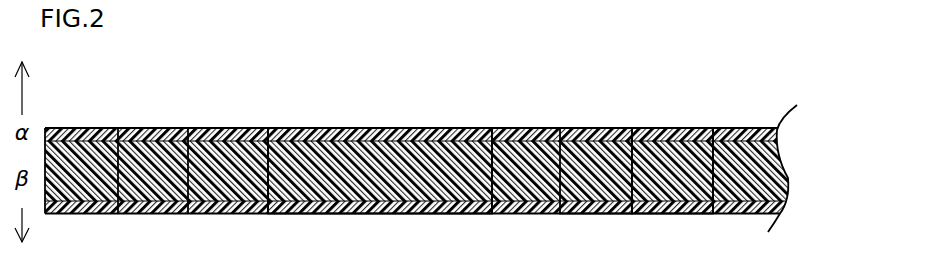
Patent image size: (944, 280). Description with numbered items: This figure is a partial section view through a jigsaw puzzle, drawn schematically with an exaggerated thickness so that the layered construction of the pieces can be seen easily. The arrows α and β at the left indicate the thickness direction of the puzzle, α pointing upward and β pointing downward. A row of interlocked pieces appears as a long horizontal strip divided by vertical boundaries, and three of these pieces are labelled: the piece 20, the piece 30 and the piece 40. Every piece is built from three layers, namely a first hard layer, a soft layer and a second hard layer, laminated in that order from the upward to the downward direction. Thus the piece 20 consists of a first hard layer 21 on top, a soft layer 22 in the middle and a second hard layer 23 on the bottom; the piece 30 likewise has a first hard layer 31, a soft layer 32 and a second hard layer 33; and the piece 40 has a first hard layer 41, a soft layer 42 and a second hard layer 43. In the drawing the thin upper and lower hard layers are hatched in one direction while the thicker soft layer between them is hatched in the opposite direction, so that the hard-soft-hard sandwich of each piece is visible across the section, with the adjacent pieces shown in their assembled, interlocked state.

The piece 20 is at (380, 160).
The first hard layer 21 is at (377, 132).
The soft layer 22 is at (327, 160).
The second hard layer 23 is at (375, 205).
The piece 30 is at (608, 161).
The first hard layer 31 is at (690, 132).
The soft layer 32 is at (667, 140).
The second hard layer 33 is at (665, 205).
The piece 40 is at (598, 165).
The first hard layer 41 is at (605, 137).
The soft layer 42 is at (588, 150).
The second hard layer 43 is at (588, 205).